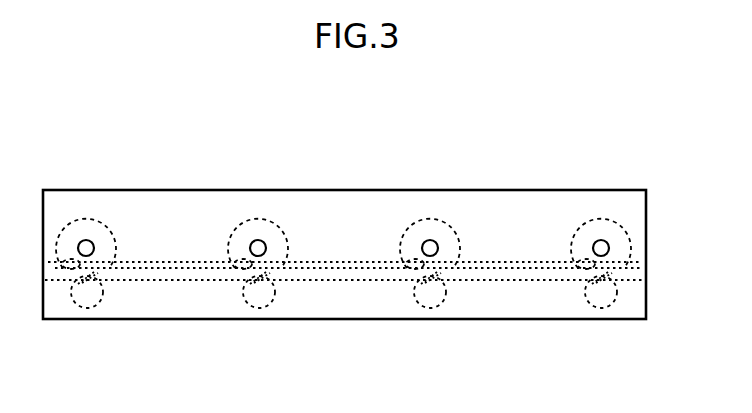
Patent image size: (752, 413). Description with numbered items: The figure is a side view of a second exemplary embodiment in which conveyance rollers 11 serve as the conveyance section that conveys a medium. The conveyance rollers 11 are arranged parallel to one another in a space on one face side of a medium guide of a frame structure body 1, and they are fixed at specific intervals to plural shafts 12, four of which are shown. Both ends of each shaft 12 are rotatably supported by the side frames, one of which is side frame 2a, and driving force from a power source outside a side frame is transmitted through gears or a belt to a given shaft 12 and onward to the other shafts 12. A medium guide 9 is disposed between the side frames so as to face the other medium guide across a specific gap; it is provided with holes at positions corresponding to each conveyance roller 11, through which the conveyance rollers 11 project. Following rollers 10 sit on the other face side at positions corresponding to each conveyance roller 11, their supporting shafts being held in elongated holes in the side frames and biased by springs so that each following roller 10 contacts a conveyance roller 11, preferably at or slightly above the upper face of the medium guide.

The frame structure body 1 is at (375, 235).
The side frame 2a is at (349, 302).
The medium guide 9 is at (652, 265).
The following roller 10 is at (85, 360).
The conveyance roller 11 is at (68, 158).
The shaft 12 is at (86, 240).